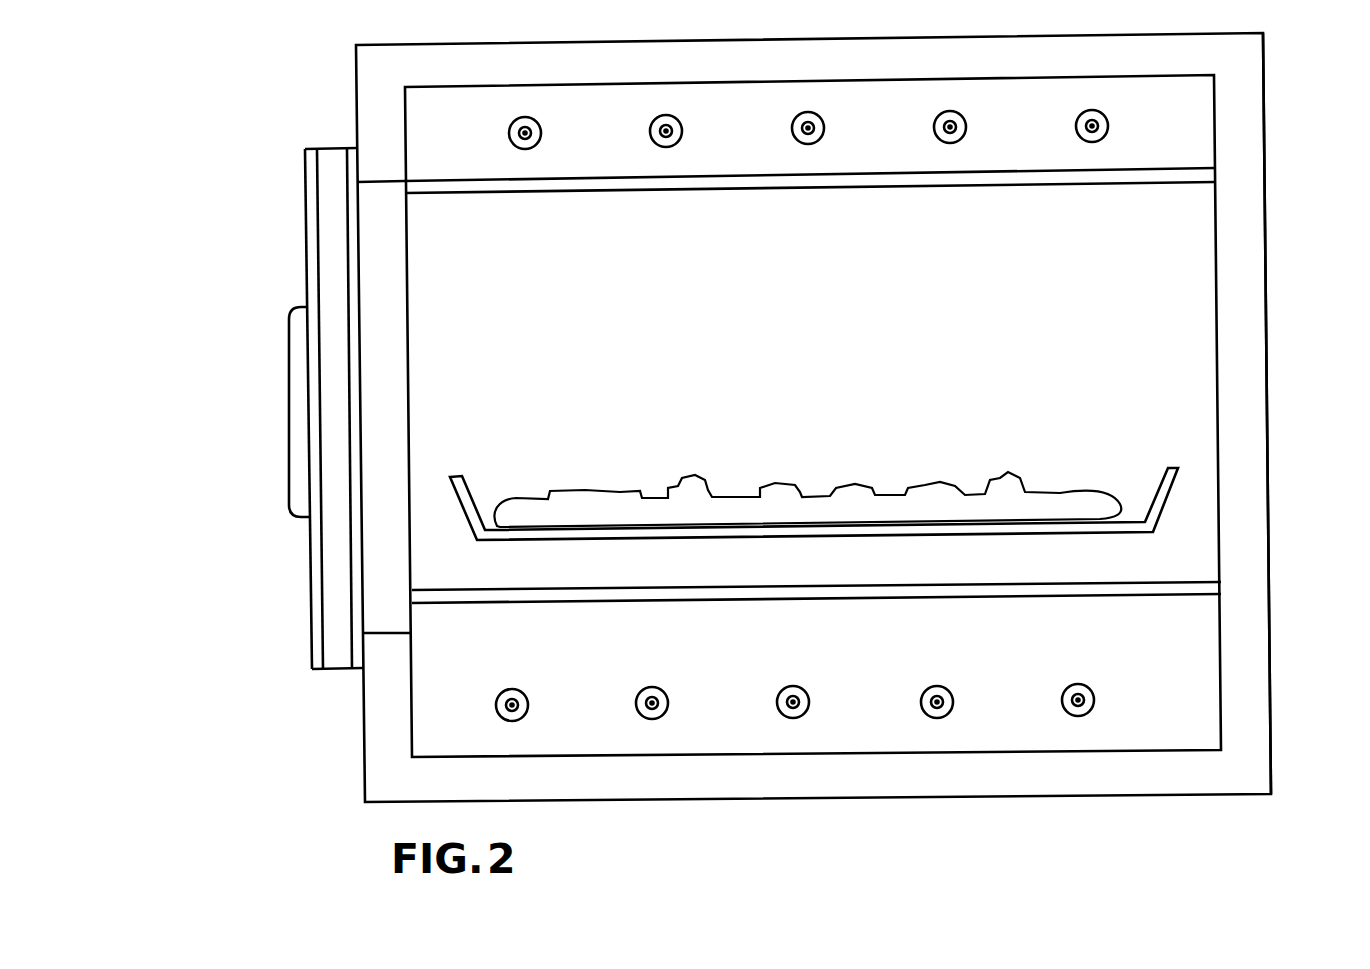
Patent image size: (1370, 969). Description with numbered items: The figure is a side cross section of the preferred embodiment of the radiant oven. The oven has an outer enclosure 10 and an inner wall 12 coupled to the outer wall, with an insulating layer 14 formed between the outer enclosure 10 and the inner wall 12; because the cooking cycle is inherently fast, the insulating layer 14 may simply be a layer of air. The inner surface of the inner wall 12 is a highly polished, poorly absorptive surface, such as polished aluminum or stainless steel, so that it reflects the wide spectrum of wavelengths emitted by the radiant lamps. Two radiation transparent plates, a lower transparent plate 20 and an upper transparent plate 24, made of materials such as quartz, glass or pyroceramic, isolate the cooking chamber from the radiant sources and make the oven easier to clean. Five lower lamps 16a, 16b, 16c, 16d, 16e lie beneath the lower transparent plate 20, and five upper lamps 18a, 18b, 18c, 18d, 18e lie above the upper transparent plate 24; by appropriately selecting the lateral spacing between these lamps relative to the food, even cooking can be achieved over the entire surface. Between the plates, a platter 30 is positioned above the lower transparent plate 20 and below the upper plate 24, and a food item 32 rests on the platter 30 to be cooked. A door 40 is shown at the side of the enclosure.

The outer enclosure 10 is at (1268, 365).
The inner wall 12 is at (1217, 333).
The insulating layer 14 is at (1245, 278).
The lower lamp 16a is at (528, 704).
The lower lamp 16b is at (668, 701).
The lower lamp 16c is at (809, 700).
The lower lamp 16d is at (953, 702).
The lower lamp 16e is at (1094, 698).
The upper lamp 18a is at (541, 133).
The upper lamp 18b is at (682, 132).
The upper lamp 18c is at (821, 136).
The upper lamp 18d is at (963, 135).
The upper lamp 18e is at (1106, 133).
The lower transparent plate 20 is at (912, 590).
The upper transparent plate 24 is at (1005, 183).
The platter 30 is at (1165, 502).
The food item 32 is at (967, 498).
The door 40 is at (296, 250).